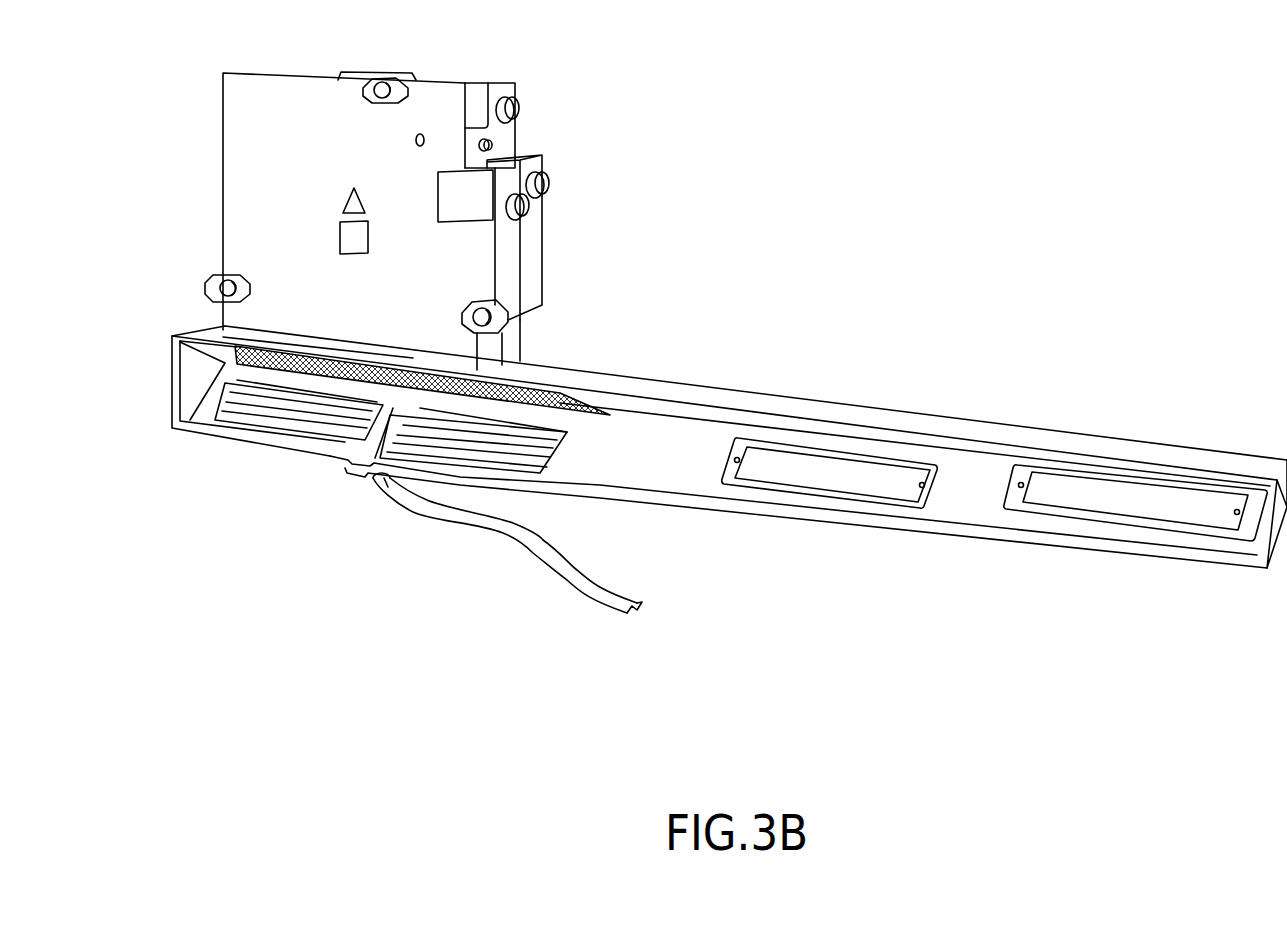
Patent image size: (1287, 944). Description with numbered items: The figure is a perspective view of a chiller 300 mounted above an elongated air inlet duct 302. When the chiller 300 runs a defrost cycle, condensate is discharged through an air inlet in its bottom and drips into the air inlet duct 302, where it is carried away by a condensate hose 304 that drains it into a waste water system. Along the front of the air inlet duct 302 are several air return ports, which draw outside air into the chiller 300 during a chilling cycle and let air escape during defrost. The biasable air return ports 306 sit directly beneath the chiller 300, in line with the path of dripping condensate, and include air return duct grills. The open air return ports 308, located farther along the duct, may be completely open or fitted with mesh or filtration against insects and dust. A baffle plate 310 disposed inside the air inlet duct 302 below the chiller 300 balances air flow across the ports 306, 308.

The chiller 300 is at (438, 92).
The air inlet duct 302 is at (560, 374).
The condensate hose 304 is at (597, 585).
The biasable air return port 306 is at (288, 416).
The open air return port 308 is at (827, 478).
The baffle plate 310 is at (200, 348).